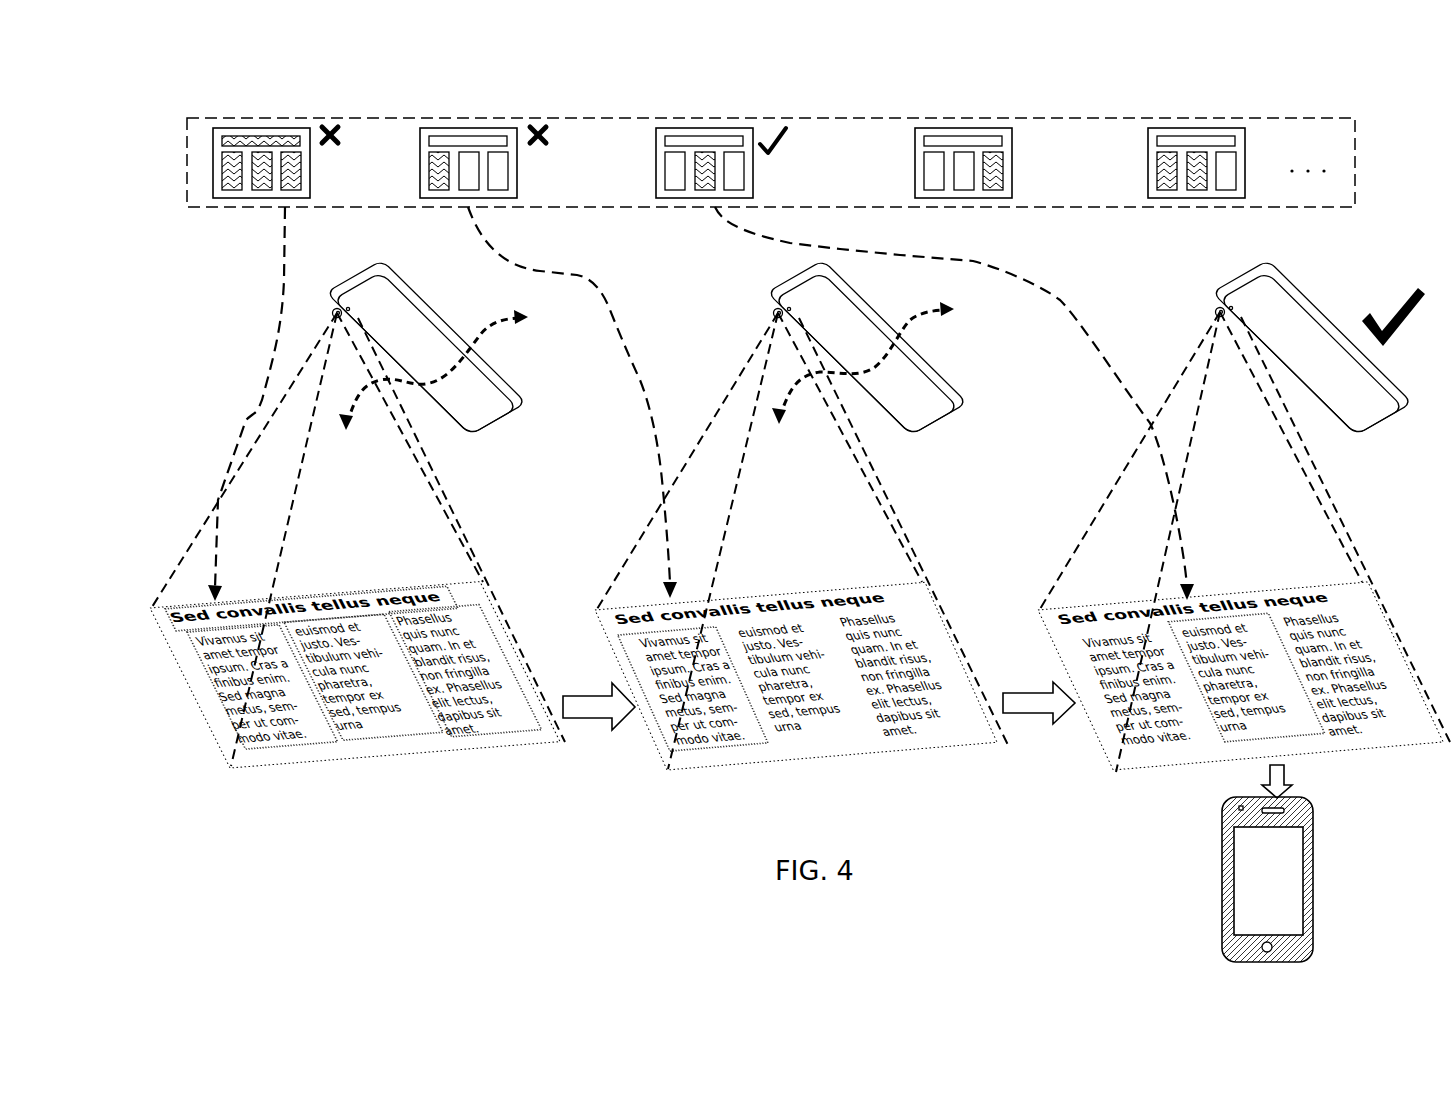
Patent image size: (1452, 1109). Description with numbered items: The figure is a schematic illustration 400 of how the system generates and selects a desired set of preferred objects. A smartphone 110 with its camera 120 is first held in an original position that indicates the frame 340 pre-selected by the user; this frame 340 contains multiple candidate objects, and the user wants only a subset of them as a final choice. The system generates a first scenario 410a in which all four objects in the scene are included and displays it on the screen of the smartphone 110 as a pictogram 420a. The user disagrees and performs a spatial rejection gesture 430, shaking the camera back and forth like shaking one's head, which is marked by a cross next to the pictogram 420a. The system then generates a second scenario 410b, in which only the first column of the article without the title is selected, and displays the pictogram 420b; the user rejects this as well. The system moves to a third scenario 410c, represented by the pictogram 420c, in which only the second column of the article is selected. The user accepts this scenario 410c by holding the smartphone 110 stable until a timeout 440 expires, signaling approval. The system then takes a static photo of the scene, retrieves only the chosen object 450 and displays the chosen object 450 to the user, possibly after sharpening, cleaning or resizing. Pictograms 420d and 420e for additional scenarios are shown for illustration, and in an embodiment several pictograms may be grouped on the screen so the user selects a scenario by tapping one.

The schematic illustration 400 is at (1367, 115).
The pictogram 420a is at (212, 155).
The pictogram 420b is at (420, 163).
The pictogram 420c is at (655, 153).
The pictogram 420d is at (913, 155).
The pictogram 420e is at (1146, 155).
The smartphone 110 is at (427, 295).
The camera 120 is at (326, 311).
The spatial rejection gesture 430 is at (498, 327).
The timeout 440 is at (1357, 298).
The frame 340 is at (338, 711).
The scenario 410a is at (277, 757).
The scenario 410b is at (718, 758).
The scenario 410c is at (1312, 744).
The chosen object 450 is at (1240, 855).